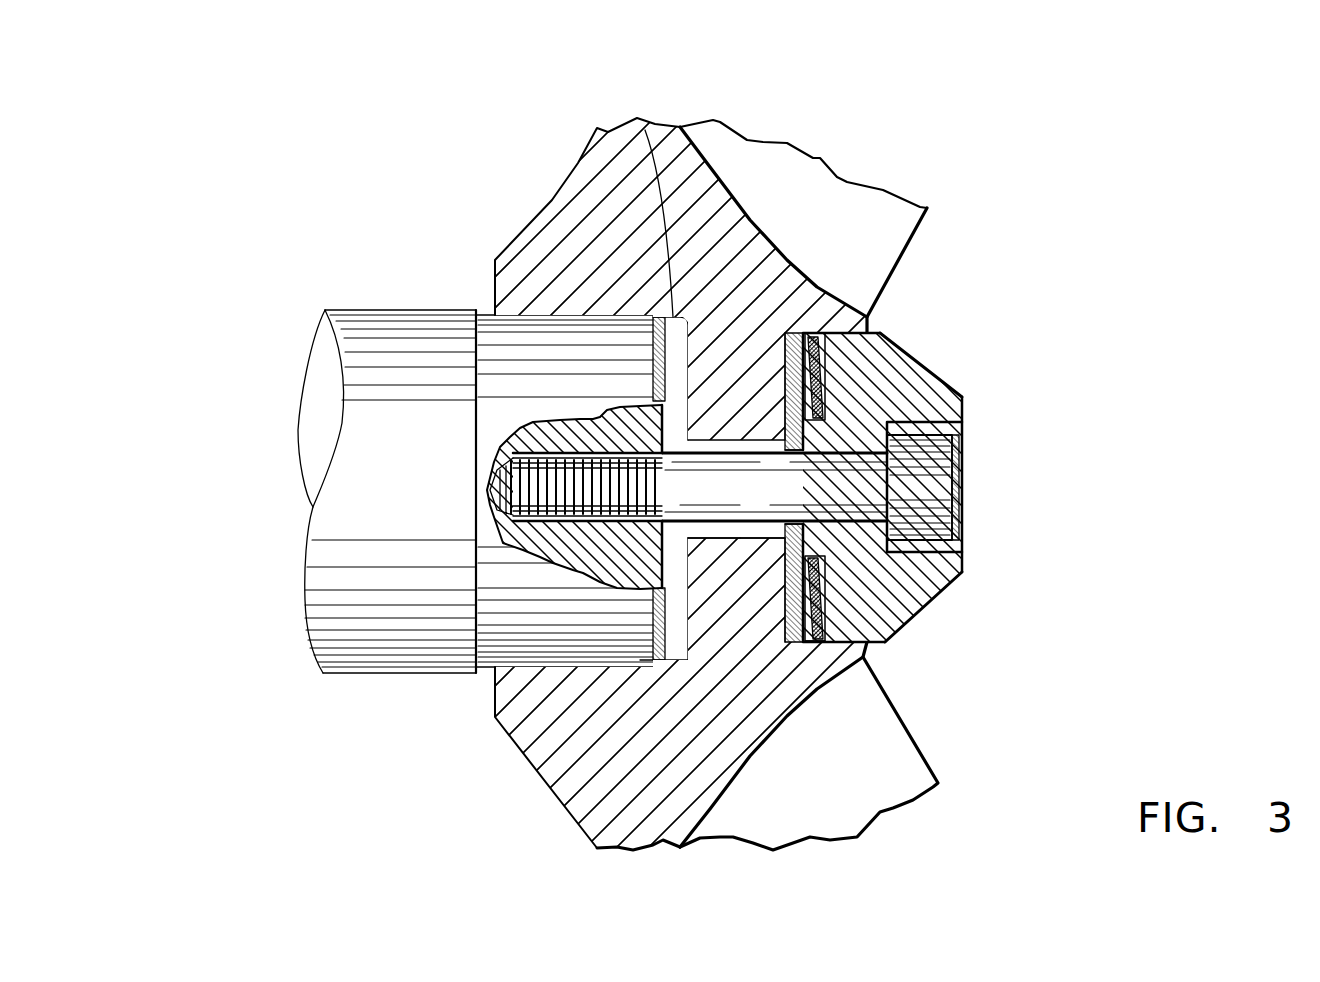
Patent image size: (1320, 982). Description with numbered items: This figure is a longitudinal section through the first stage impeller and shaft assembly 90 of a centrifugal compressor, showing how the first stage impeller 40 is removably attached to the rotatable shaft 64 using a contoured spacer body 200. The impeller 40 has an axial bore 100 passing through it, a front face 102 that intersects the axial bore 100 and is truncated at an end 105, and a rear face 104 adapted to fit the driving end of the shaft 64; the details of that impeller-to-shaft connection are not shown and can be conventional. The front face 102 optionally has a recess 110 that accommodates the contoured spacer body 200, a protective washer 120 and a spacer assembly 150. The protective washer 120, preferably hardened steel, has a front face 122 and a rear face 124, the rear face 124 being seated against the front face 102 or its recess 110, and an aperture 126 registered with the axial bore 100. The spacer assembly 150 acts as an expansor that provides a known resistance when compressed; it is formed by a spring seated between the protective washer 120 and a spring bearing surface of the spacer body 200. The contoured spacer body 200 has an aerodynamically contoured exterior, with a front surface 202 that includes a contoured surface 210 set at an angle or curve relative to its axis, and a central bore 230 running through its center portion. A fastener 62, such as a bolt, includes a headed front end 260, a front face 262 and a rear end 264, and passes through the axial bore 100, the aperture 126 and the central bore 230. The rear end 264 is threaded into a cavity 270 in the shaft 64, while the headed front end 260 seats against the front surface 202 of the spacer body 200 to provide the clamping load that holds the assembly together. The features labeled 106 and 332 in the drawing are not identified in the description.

The first stage impeller 40 is at (573, 213).
The fastener 62 is at (855, 462).
The rotatable shaft 64 is at (353, 460).
The first stage impeller and shaft assembly 90 is at (1250, 566).
The axial bore 100 is at (573, 797).
The front face 102 is at (677, 315).
The rear face 104 is at (527, 760).
The end 105 is at (868, 652).
The hub body 106 is at (645, 130).
The recess 110 is at (835, 425).
The protective washer 120 is at (790, 608).
The front face 122 is at (835, 645).
The rear face 124 is at (782, 535).
The aperture 126 is at (702, 530).
The spacer assembly 150 is at (815, 395).
The contoured spacer body 200 is at (937, 618).
The front surface 202 is at (963, 578).
The contoured surface 210 is at (945, 600).
The central bore 230 is at (963, 532).
The headed front end 260 is at (975, 465).
The front face 262 is at (900, 496).
The rear end 264 is at (607, 515).
The cavity 270 is at (600, 508).
The sleeve 332 is at (500, 405).